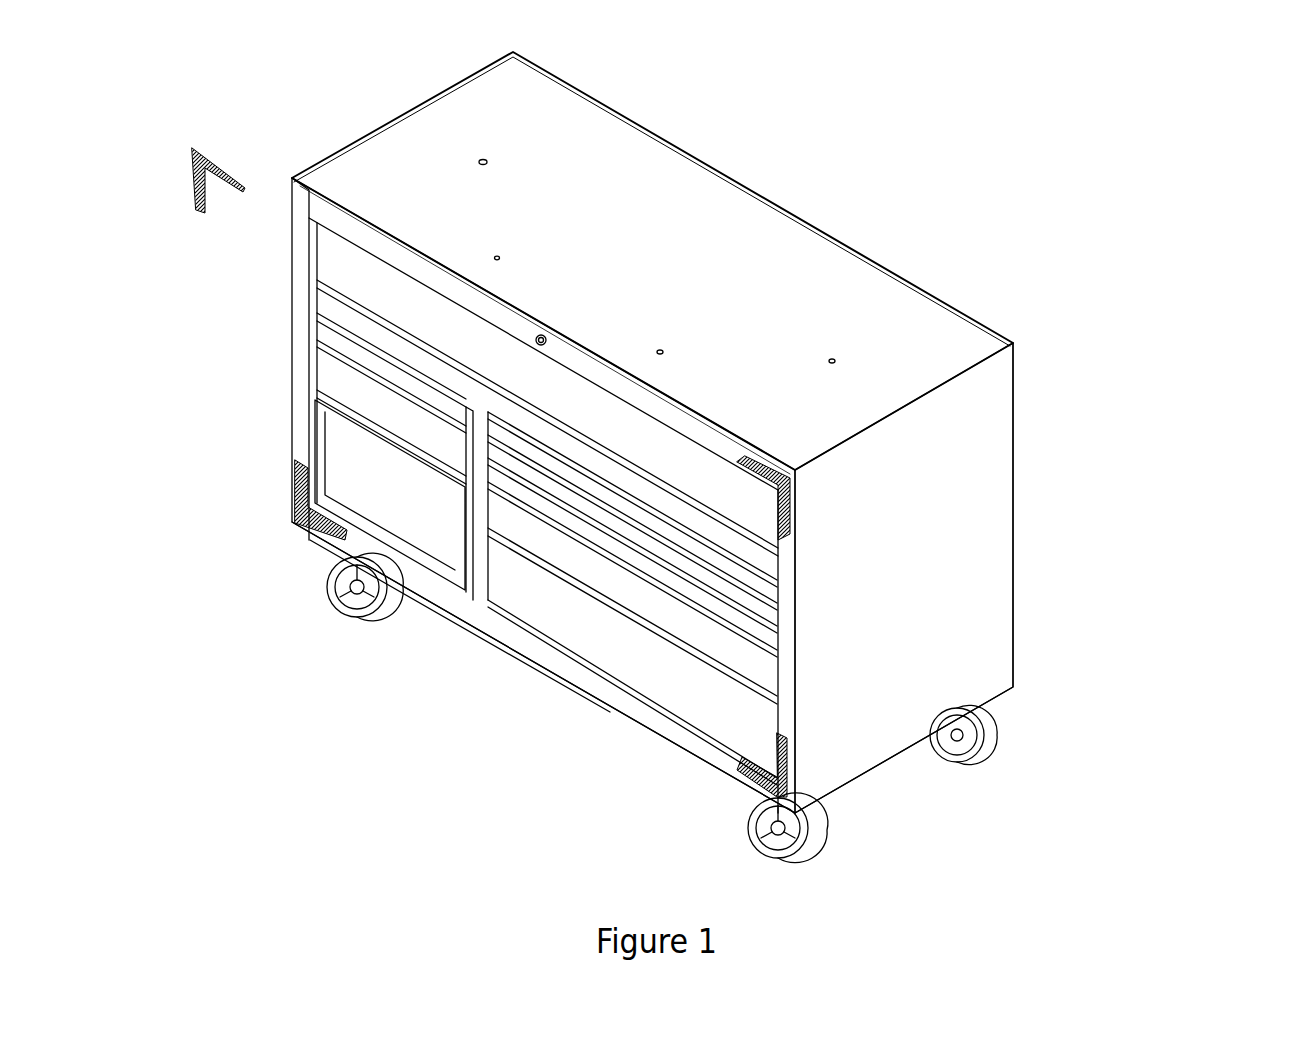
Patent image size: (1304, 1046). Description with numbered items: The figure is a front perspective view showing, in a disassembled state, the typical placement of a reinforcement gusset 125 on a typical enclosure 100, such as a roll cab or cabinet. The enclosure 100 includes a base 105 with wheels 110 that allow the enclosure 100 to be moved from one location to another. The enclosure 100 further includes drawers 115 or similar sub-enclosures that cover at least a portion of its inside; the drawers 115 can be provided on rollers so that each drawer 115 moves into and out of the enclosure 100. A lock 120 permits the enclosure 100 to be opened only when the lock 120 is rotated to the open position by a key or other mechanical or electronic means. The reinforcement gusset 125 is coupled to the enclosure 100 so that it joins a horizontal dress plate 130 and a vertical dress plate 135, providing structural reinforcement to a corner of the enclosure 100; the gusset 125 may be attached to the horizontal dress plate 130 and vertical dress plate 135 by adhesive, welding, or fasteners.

The enclosure 100 is at (985, 245).
The base 105 is at (1005, 528).
The wheels 110 is at (1000, 722).
The drawers 115 is at (748, 724).
The lock 120 is at (546, 336).
The reinforcement gusset 125 is at (188, 160).
The horizontal dress plate 130 is at (420, 268).
The vertical dress plate 135 is at (302, 393).